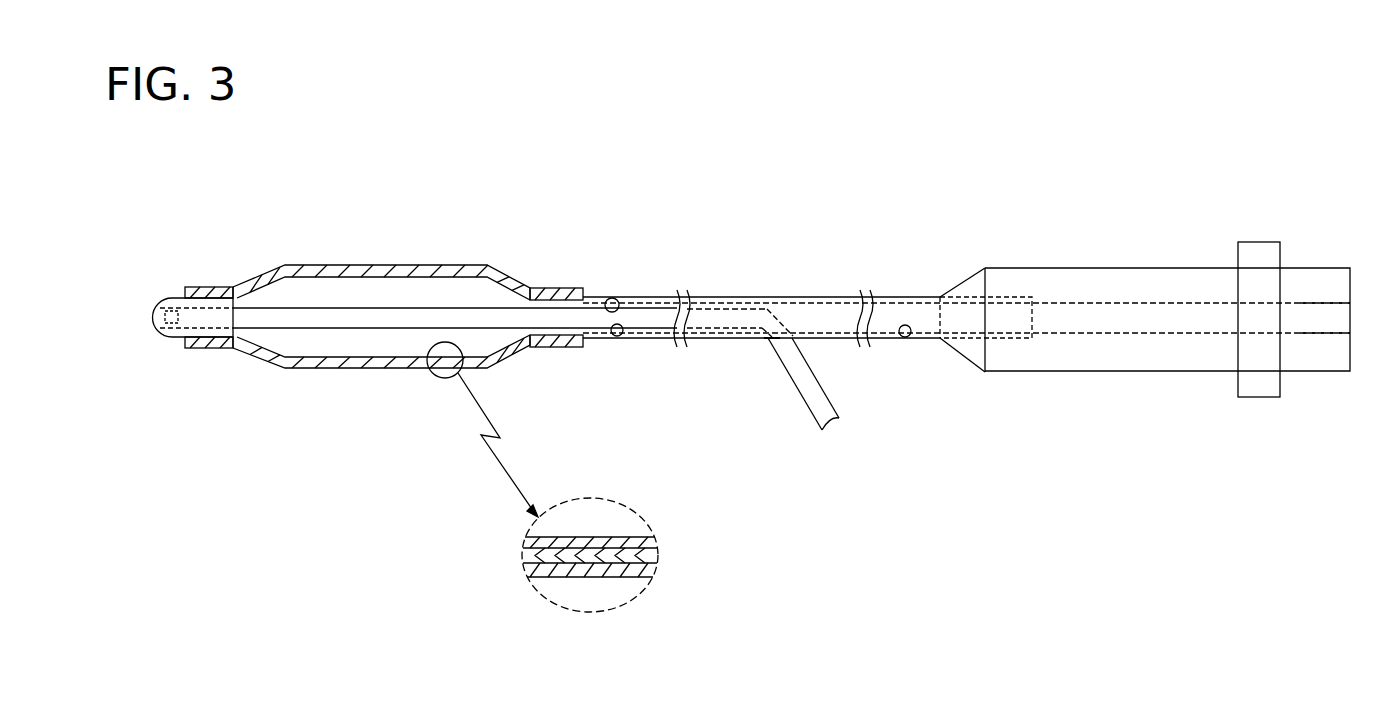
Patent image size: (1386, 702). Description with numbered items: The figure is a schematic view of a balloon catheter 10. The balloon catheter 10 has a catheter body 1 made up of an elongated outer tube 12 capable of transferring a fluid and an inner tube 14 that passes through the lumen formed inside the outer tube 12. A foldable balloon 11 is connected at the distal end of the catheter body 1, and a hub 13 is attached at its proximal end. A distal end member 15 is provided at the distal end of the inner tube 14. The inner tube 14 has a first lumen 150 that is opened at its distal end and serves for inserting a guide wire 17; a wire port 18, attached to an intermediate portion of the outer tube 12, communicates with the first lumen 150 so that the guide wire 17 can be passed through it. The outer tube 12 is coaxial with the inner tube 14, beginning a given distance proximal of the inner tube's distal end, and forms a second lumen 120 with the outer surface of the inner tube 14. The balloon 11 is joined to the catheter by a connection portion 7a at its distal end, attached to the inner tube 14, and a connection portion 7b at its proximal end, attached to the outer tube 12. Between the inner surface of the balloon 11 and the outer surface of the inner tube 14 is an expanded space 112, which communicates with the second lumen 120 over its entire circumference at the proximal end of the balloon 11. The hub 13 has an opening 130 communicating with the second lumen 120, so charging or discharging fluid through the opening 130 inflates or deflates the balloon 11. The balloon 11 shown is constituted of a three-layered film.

The balloon catheter 10 is at (1052, 544).
The distal end member 15 is at (172, 296).
The first lumen 150 is at (173, 325).
The connection portion at the distal end of the balloon 7a is at (206, 288).
The balloon 11 is at (356, 263).
The inner tube 14 is at (395, 318).
The expanded space 112 is at (450, 286).
The connection portion at the proximal end of the balloon 7b is at (564, 288).
The outer tube 12 is at (756, 296).
The second lumen 120 is at (613, 298).
The wire port 18 is at (768, 341).
The guide wire 17 is at (805, 400).
The catheter body 1 is at (963, 278).
The hub 13 is at (1146, 270).
The opening 130 is at (1343, 313).